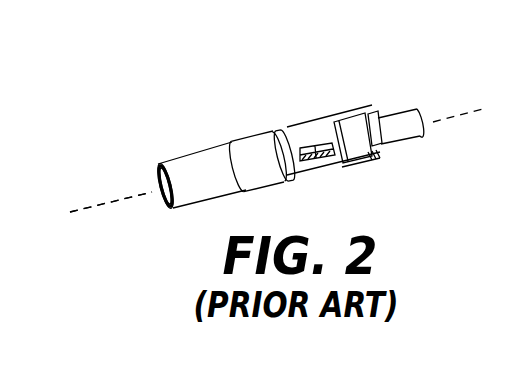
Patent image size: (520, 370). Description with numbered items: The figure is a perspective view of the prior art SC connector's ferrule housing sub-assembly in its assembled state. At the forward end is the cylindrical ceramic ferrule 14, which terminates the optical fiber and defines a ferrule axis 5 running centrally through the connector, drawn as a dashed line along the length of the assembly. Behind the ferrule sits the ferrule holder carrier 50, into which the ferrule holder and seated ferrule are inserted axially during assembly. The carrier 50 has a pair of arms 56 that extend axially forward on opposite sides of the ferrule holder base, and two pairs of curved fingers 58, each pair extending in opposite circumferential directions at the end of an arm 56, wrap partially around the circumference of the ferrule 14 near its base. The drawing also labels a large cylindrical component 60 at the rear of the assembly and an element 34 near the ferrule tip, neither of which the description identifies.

The ferrule axis 5 is at (118, 200).
The cylindrical ceramic ferrule 14 is at (400, 118).
The optical fiber 34 is at (428, 118).
The ferrule holder carrier 50 is at (293, 128).
The arms 56 is at (333, 122).
The curved fingers 58 is at (373, 118).
The connector housing 60 is at (238, 122).